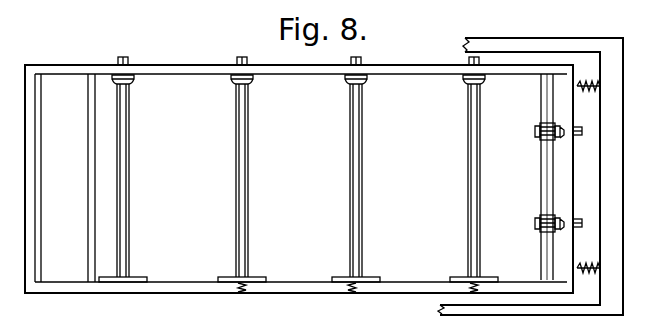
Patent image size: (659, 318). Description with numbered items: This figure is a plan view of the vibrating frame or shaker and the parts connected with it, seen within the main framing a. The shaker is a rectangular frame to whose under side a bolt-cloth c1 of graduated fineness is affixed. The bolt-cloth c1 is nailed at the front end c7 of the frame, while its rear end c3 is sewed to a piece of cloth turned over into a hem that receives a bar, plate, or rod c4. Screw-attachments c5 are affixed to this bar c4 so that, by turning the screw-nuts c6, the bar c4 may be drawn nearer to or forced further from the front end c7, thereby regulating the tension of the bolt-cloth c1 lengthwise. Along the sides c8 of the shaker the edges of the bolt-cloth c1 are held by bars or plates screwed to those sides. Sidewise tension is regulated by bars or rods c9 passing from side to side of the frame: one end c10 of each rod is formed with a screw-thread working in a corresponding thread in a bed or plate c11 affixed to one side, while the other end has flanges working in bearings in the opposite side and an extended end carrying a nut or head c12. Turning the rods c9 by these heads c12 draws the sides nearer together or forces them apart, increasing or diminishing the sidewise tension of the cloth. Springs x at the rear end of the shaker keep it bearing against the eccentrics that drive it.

The bolt-cloth c1 is at (299, 179).
The rear end of the bolt-cloth c3 is at (534, 177).
The bar, plate, or rod c4 is at (549, 177).
The screw-attachments c5 is at (551, 171).
The screw-nuts c6 is at (583, 169).
The front end of the vibrating frame or shaker c7 is at (58, 178).
The sides of the vibrating frame or shaker c8 is at (301, 173).
The bars or rods c9 is at (302, 176).
The screw-threaded end c10 is at (360, 294).
The bed or plate c11 is at (298, 271).
The nut or head c12 is at (305, 54).
The main framing a is at (530, 176).
The springs x is at (588, 169).